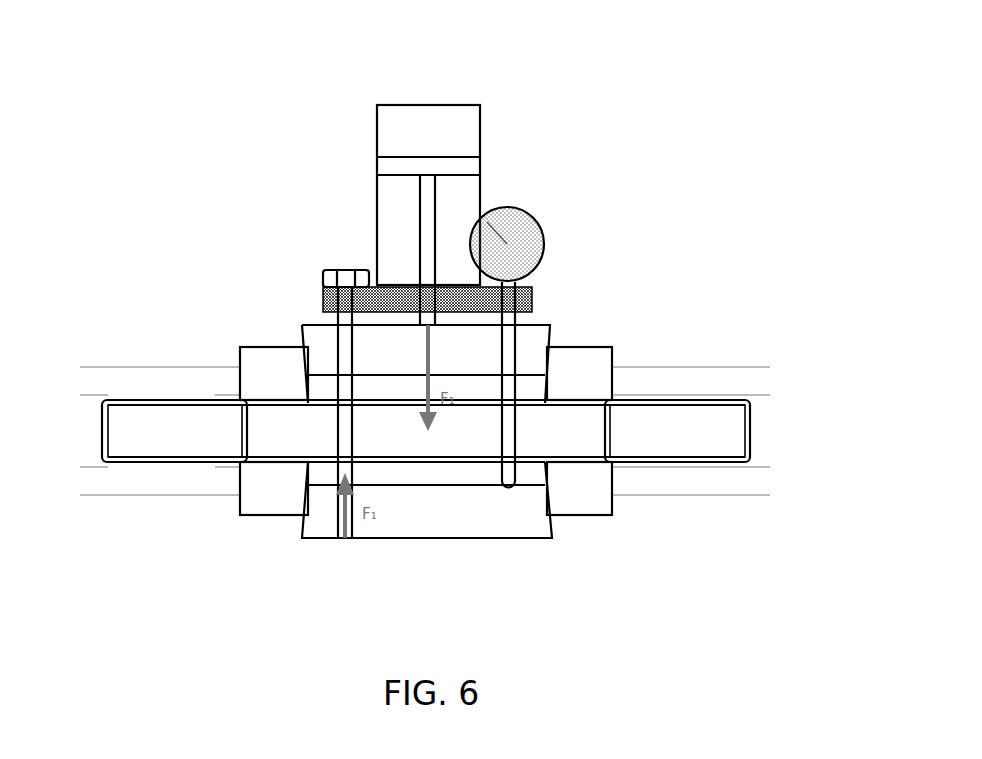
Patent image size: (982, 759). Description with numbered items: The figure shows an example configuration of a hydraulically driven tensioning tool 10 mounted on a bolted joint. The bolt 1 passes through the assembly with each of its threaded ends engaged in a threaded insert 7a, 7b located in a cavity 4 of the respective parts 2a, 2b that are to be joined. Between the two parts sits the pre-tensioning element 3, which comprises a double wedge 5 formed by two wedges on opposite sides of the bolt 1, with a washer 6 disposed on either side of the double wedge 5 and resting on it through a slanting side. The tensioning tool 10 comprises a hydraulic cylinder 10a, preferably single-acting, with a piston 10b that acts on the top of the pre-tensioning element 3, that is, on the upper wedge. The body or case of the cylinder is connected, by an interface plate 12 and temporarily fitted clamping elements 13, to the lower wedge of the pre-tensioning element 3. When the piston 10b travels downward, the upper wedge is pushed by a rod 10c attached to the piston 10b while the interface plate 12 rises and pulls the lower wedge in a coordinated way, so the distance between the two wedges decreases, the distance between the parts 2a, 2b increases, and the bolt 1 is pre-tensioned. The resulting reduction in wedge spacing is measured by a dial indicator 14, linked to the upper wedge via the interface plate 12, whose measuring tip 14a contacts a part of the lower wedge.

The bolt 1 is at (290, 437).
The first part 2a is at (107, 485).
The second part 2b is at (710, 380).
The pre-tensioning element 3 is at (472, 547).
The cavity 4 is at (762, 413).
The double wedge 5 is at (550, 482).
The washer 6 is at (270, 372).
The threaded insert of the first part 7a is at (137, 393).
The threaded insert of the second part 7b is at (680, 463).
The tensioning tool 10 is at (397, 135).
The hydraulic cylinder 10a is at (480, 135).
The piston 10b is at (468, 168).
The rod 10c is at (417, 230).
The interface plate 12 is at (533, 290).
The clamping elements 13 is at (332, 312).
The dial indicator 14 is at (527, 240).
The measuring tip 14a is at (508, 487).